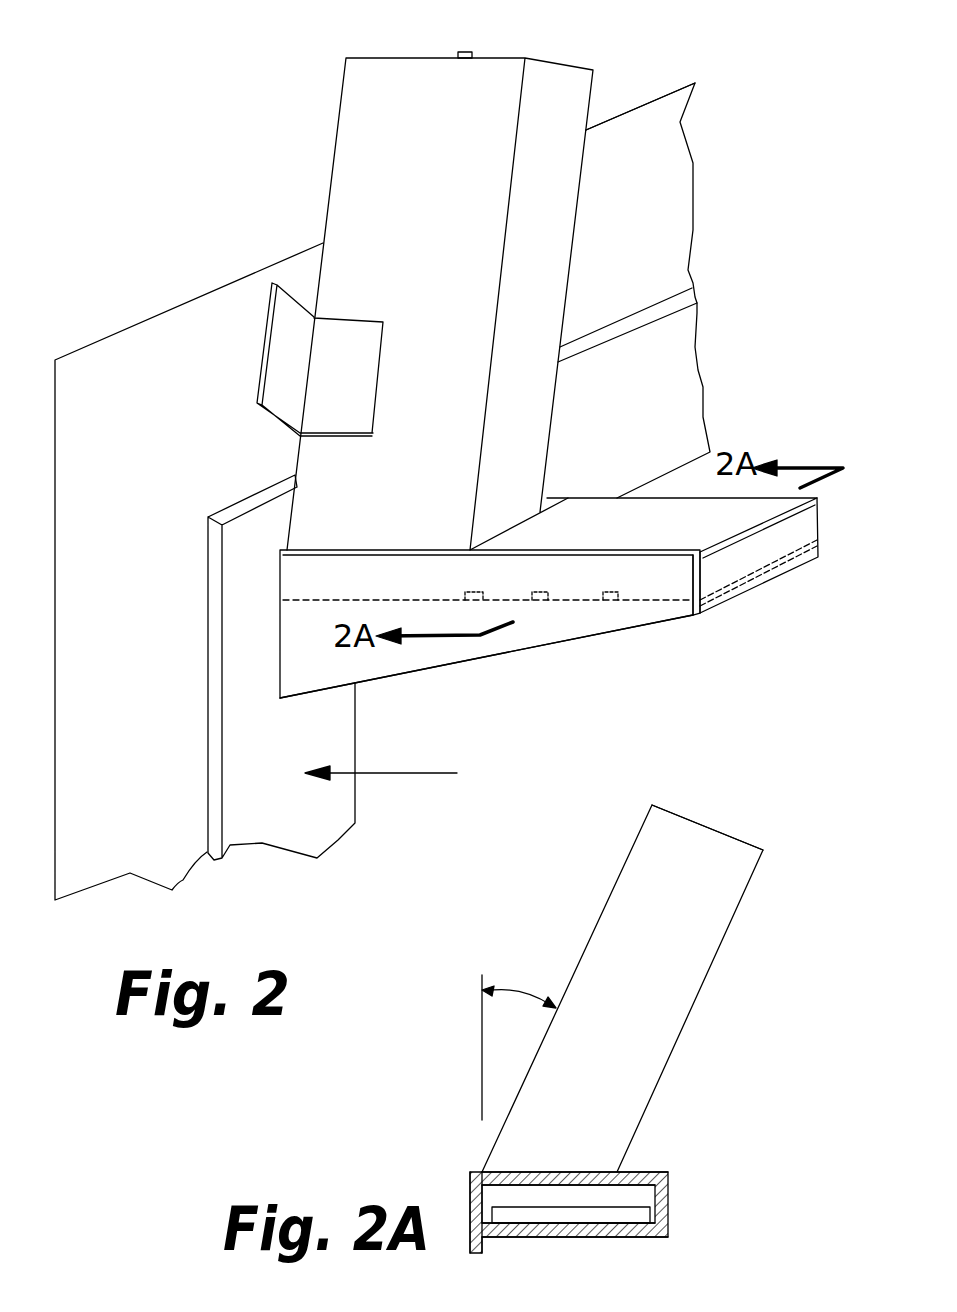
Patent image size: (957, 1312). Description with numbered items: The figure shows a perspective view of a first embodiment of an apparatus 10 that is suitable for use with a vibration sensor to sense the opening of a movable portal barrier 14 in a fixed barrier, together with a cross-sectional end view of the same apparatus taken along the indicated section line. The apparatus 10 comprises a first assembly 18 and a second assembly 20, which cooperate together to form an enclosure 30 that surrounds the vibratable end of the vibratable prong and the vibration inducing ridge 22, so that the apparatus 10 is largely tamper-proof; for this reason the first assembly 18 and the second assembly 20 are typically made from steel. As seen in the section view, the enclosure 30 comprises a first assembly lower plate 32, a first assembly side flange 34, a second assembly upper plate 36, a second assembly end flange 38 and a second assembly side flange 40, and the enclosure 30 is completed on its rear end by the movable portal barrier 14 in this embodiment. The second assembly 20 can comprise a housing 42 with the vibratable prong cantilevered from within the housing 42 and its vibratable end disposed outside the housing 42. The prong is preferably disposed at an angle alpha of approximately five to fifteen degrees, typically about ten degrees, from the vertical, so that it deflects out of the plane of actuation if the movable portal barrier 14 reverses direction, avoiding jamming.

In FIG. 2, the apparatus 10 is at (258, 162).
In FIG. 2A, the apparatus 10 is at (766, 957).
In FIG. 2, the movable portal barrier 14 is at (342, 800).
In FIG. 2, the first assembly 18 is at (434, 673).
In FIG. 2, the second assembly 20 is at (565, 52).
In FIG. 2, the vibration inducing ridge 22 is at (533, 605).
In FIG. 2A, the enclosure 30 is at (615, 1193).
In FIG. 2, the first assembly lower plate 32 is at (615, 608).
In FIG. 2A, the first assembly lower plate 32 is at (560, 1237).
In FIG. 2, the first assembly side flange 34 is at (708, 603).
In FIG. 2A, the first assembly side flange 34 is at (470, 1197).
In FIG. 2, the second assembly upper plate 36 is at (625, 508).
In FIG. 2A, the second assembly upper plate 36 is at (630, 1170).
In FIG. 2, the second assembly end flange 38 is at (783, 533).
In FIG. 2A, the second assembly side flange 40 is at (668, 1180).
In FIG. 2, the housing 42 is at (592, 102).
In FIG. 2A, the housing 42 is at (667, 810).